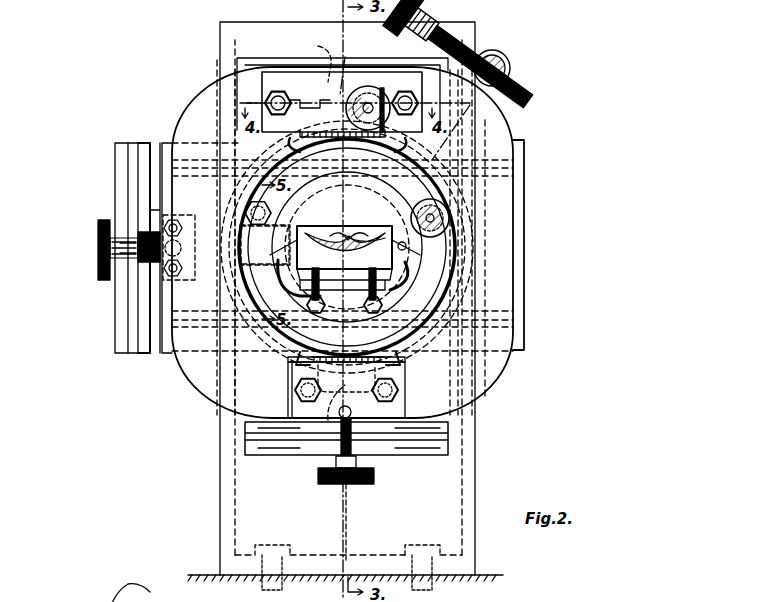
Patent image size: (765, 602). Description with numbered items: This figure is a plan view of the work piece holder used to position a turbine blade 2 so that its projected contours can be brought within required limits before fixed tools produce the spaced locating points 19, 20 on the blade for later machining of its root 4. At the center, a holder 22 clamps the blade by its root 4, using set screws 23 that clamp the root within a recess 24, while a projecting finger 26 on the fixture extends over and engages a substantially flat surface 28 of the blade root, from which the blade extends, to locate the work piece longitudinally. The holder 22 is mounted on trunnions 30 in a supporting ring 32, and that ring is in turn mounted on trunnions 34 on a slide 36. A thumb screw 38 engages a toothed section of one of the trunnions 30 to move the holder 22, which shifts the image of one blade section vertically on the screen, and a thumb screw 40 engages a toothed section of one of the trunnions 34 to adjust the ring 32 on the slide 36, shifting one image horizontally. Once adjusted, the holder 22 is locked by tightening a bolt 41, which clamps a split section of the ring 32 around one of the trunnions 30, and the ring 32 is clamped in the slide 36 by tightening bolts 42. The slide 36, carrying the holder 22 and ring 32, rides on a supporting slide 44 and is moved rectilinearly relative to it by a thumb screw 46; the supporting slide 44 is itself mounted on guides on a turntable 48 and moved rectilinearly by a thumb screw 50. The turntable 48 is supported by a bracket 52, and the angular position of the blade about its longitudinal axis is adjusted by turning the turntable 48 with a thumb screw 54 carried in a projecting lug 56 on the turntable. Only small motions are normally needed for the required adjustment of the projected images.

The turbine blade 2 is at (350, 236).
The root 4 is at (372, 230).
The locating point 19 is at (300, 268).
The locating point 20 is at (406, 262).
The holder 22 is at (340, 180).
The set screws 23 is at (375, 312).
The recess 24 is at (380, 285).
The projecting finger 26 is at (345, 222).
The flat surface 28 is at (265, 245).
The trunnions 30 is at (240, 262).
The supporting ring 32 is at (432, 284).
The trunnions 34 is at (285, 470).
The slide 36 is at (490, 372).
The thumb screw 38 is at (432, 215).
The thumb screw 40 is at (375, 88).
The bolt 41 is at (250, 208).
The bolts 42 is at (270, 97).
The supporting slide 44 is at (262, 428).
The thumb screw 46 is at (372, 483).
The turntable 48 is at (155, 358).
The thumb screw 50 is at (100, 240).
The bracket 52 is at (465, 433).
The thumb screw 54 is at (455, 10).
The projecting lug 56 is at (505, 60).